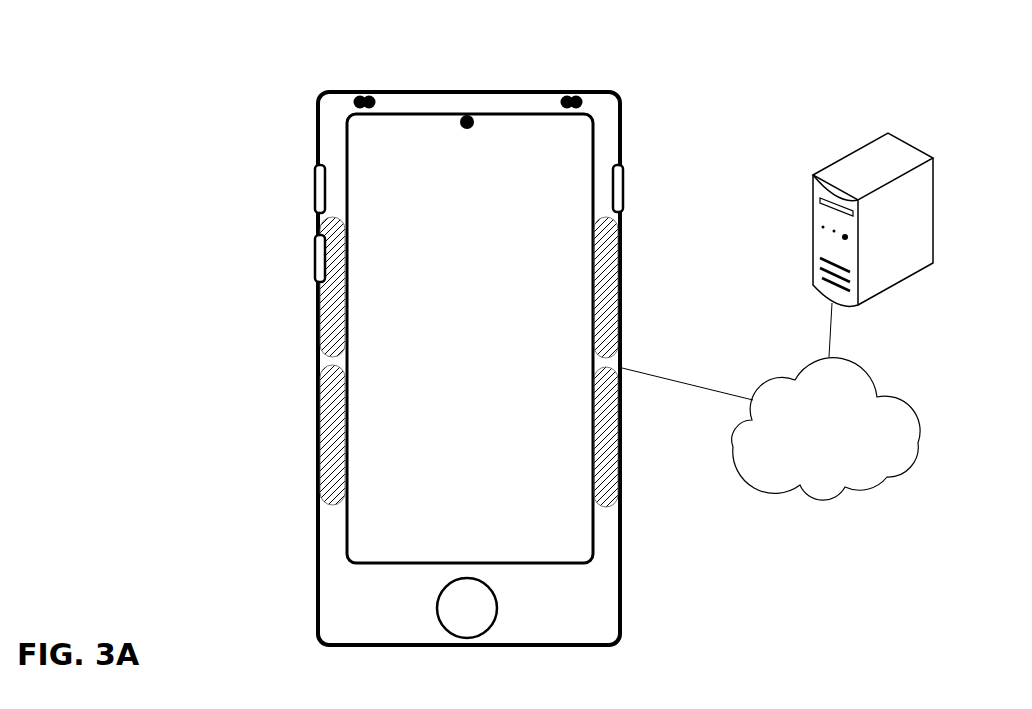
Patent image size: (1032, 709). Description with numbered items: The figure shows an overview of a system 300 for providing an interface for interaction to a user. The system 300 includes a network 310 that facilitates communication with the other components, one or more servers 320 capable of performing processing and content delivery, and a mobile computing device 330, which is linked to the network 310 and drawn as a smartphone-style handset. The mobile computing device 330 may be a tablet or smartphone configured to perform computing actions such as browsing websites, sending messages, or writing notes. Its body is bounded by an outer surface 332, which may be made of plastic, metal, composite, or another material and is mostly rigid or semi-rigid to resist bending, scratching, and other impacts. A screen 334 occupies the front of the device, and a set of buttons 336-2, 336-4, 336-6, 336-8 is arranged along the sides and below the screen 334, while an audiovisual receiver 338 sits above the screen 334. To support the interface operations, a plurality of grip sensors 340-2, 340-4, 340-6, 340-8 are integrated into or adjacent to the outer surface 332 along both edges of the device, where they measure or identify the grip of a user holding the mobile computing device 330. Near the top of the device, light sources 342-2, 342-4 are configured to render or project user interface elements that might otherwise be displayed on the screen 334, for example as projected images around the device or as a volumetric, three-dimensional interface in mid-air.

The system 300 is at (824, 672).
The network 310 is at (842, 436).
The server 320 is at (912, 243).
The mobile computing device 330 is at (259, 380).
The outer surface 332 is at (345, 620).
The screen 334 is at (487, 523).
The button 336-2 is at (314, 190).
The button 336-4 is at (314, 258).
The button 336-6 is at (624, 176).
The button 336-8 is at (482, 605).
The audiovisual receiver 338 is at (467, 130).
The grip sensor 340-2 is at (345, 290).
The grip sensor 340-4 is at (594, 288).
The grip sensor 340-6 is at (345, 436).
The grip sensor 340-8 is at (594, 440).
The light source 342-2 is at (362, 96).
The light source 342-4 is at (572, 96).